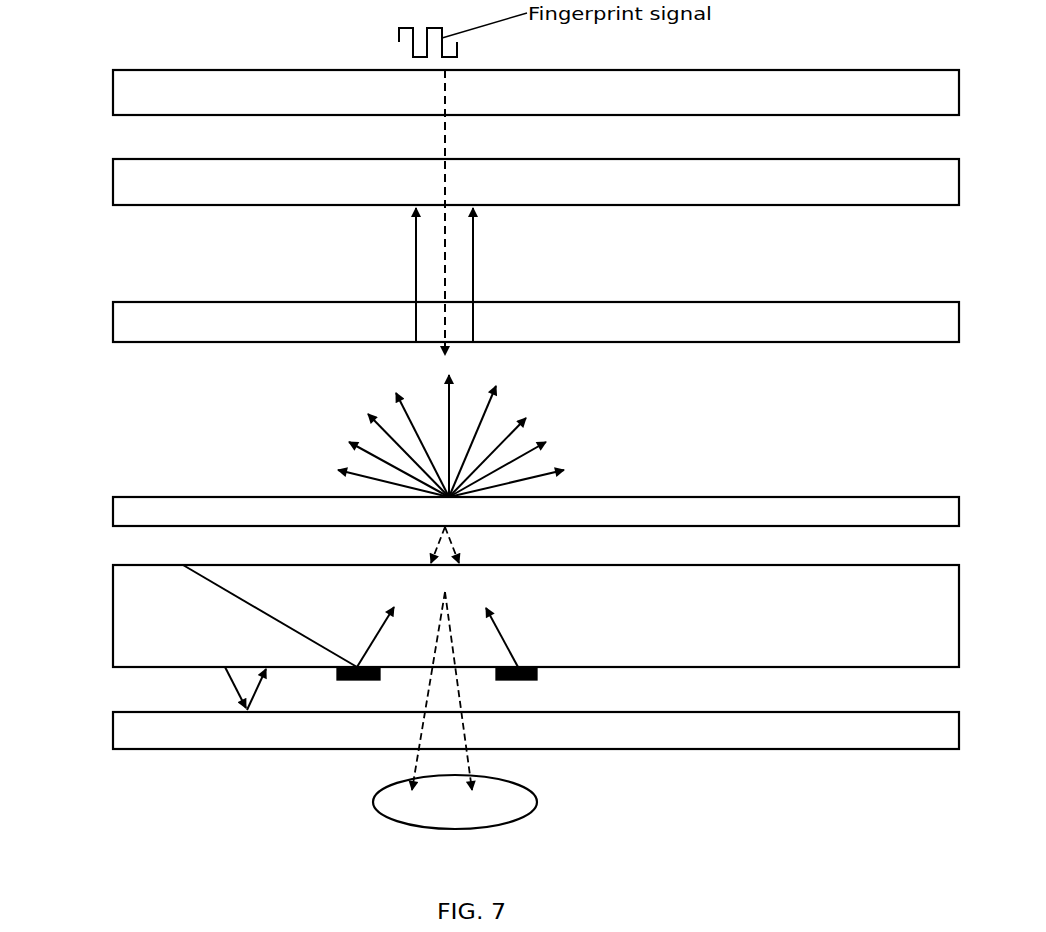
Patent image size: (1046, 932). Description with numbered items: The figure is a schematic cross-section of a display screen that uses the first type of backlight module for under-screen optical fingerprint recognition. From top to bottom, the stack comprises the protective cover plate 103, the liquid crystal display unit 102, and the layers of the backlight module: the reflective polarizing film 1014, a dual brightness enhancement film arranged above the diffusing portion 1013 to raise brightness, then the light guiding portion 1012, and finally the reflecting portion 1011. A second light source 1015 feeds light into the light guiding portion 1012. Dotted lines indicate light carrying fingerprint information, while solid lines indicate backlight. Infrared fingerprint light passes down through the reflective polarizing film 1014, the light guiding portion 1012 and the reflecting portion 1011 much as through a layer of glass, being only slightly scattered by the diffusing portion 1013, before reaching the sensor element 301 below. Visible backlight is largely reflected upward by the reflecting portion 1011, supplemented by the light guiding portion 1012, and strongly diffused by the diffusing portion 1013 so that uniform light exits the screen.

The protective cover plate 103 is at (536, 92).
The liquid crystal display unit 102 is at (536, 182).
The reflective polarizing film 1014 is at (536, 322).
The diffusing portion 1013 is at (536, 511).
The light guiding portion 1012 is at (536, 677).
The reflecting portion 1011 is at (536, 730).
The second light source 1015 is at (182, 567).
The photosensitive sensor 301 is at (455, 802).